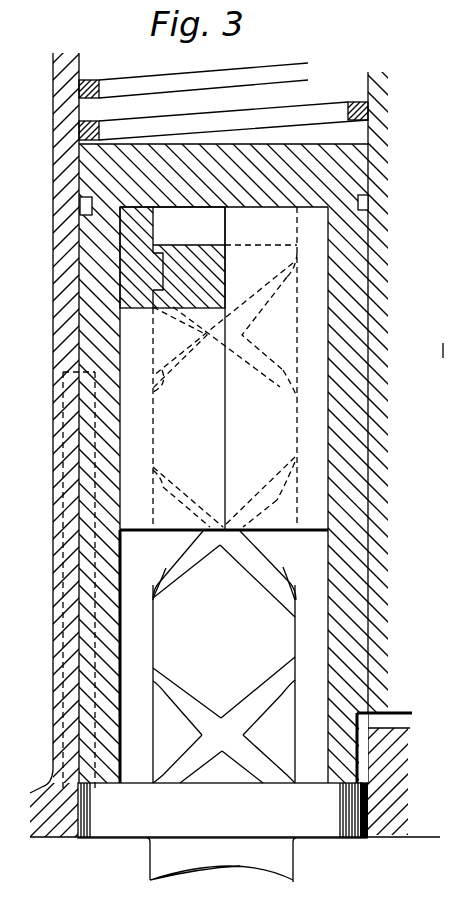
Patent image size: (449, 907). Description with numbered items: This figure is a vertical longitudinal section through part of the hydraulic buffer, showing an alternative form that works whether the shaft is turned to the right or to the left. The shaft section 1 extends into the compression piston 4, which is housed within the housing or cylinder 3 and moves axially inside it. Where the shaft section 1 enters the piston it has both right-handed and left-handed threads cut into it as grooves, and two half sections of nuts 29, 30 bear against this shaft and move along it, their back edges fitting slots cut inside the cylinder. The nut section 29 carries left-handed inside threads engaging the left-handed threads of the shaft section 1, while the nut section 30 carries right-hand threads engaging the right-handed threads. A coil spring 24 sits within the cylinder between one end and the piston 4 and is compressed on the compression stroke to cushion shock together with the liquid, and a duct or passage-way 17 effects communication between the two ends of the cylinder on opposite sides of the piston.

The shaft section 1 is at (285, 872).
The housing or cylinder 3 is at (368, 74).
The compression piston 4 is at (308, 143).
The duct or passage-way 17 is at (397, 722).
The coil spring 24 is at (288, 112).
The half section of nut 29 is at (245, 228).
The half section of nut 30 is at (205, 447).